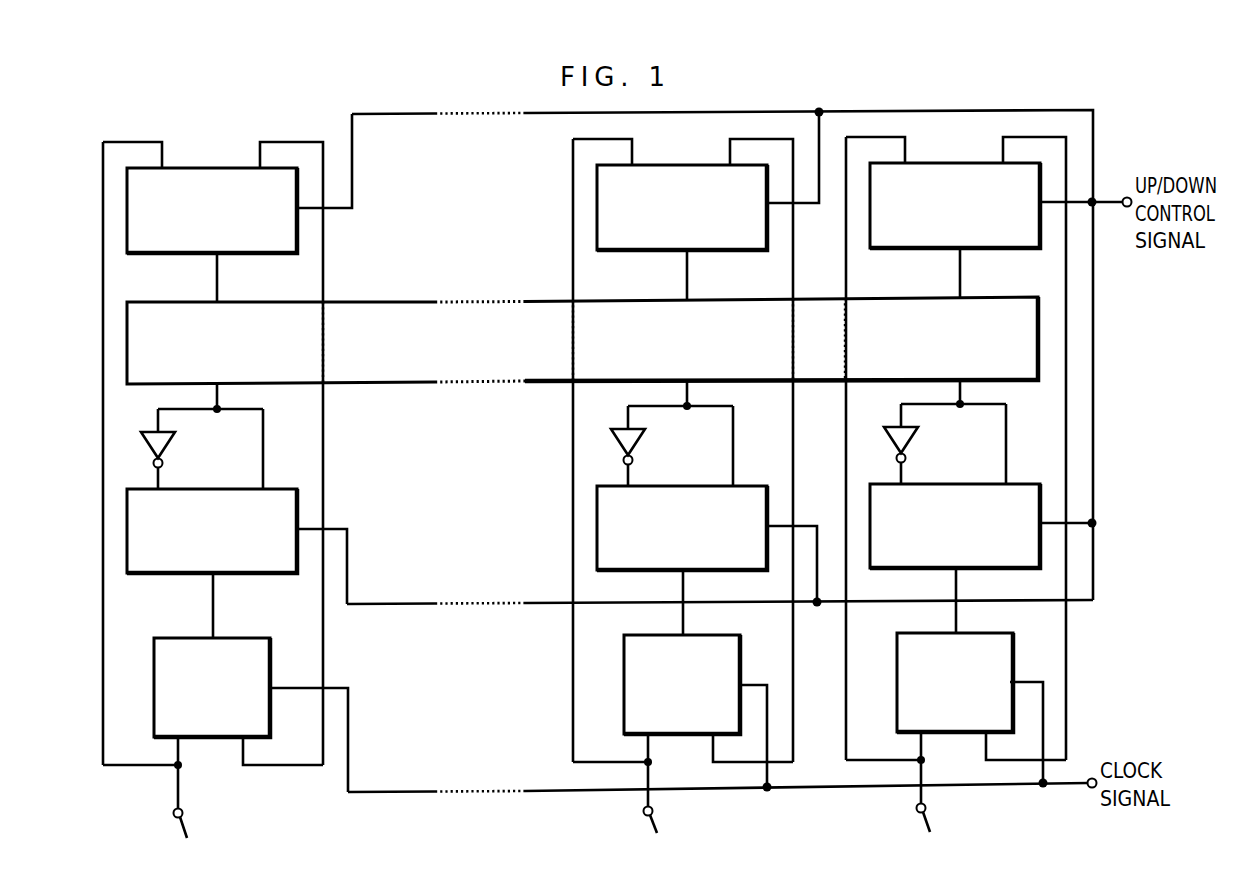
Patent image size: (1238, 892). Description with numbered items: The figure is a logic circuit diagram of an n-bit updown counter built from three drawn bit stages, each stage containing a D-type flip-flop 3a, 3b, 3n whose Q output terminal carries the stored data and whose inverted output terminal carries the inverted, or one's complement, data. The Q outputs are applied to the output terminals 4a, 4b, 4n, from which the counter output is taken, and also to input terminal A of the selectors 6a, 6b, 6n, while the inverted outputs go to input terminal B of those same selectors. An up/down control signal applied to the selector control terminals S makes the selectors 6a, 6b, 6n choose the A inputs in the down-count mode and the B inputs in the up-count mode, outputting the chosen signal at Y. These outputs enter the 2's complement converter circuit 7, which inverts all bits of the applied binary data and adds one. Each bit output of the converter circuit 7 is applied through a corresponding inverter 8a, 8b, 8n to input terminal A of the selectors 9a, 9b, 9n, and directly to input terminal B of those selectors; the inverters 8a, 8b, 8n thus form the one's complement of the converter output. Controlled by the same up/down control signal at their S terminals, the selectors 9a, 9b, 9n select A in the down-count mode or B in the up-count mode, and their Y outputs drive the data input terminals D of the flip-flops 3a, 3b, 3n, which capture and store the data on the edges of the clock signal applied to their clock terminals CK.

The flip-flop 3n is at (263, 663).
The flip-flop 3b is at (702, 682).
The flip-flop 3a is at (976, 679).
The output terminal 4n is at (184, 814).
The output terminal 4b is at (652, 811).
The output terminal 4a is at (929, 809).
The selector 6n is at (262, 250).
The selector 6b is at (687, 226).
The selector 6a is at (955, 223).
The 2's complement converter circuit 7 is at (370, 300).
The inverter 8n is at (163, 442).
The inverter 8b is at (651, 457).
The inverter 8a is at (924, 455).
The selector 9n is at (279, 492).
The selector 9b is at (689, 504).
The selector 9a is at (963, 502).